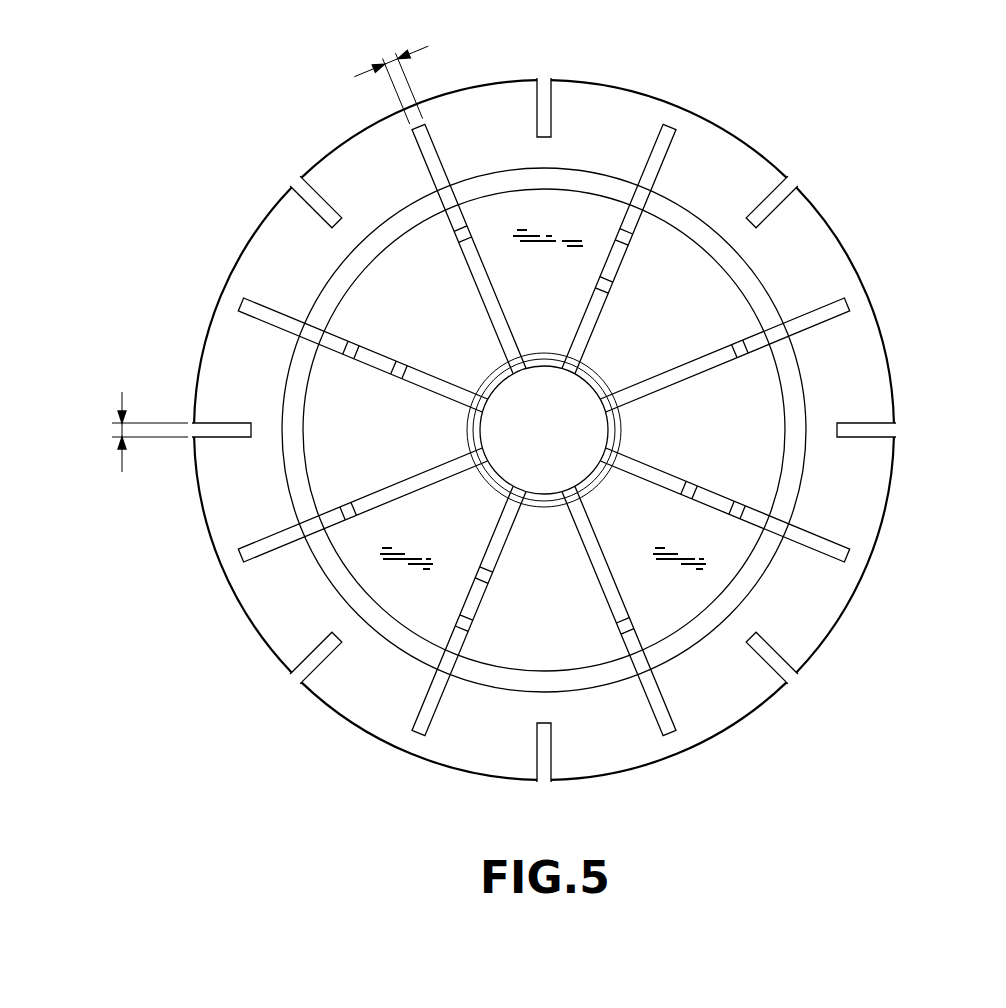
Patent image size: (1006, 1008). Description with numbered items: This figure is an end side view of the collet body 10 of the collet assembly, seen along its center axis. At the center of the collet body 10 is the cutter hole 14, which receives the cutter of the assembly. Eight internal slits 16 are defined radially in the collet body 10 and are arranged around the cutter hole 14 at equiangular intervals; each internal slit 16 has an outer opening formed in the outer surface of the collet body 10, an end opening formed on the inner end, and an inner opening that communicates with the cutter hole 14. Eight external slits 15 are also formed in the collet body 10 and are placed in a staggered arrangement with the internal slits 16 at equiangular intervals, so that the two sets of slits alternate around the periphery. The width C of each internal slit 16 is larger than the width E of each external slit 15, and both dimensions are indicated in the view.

The collet body 10 is at (897, 207).
The cutter hole 14 is at (487, 424).
The external slits 15 is at (222, 424).
The internal slits 16 is at (420, 152).